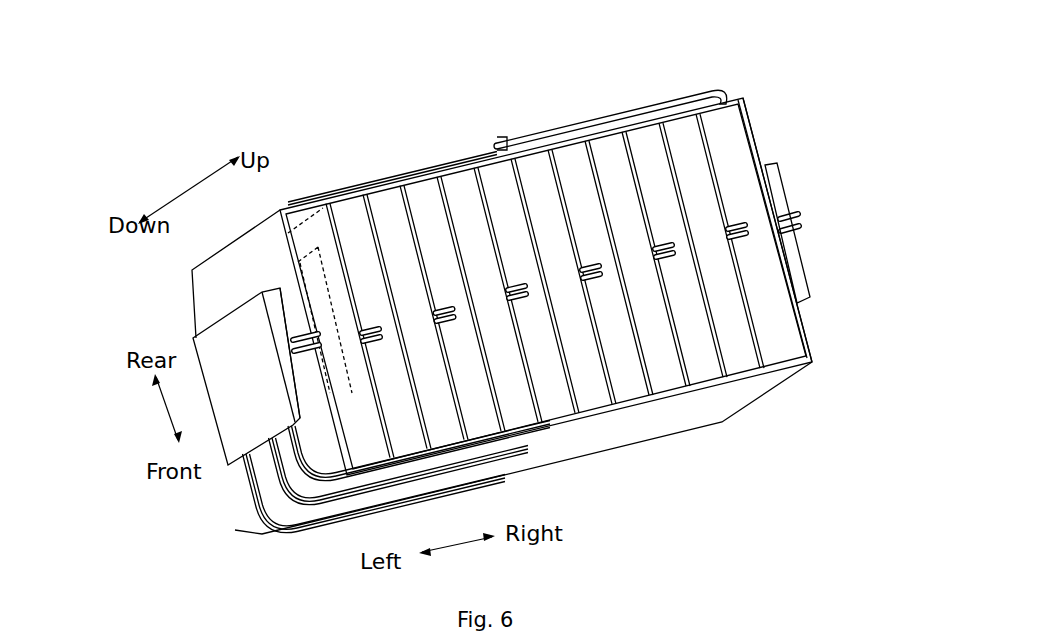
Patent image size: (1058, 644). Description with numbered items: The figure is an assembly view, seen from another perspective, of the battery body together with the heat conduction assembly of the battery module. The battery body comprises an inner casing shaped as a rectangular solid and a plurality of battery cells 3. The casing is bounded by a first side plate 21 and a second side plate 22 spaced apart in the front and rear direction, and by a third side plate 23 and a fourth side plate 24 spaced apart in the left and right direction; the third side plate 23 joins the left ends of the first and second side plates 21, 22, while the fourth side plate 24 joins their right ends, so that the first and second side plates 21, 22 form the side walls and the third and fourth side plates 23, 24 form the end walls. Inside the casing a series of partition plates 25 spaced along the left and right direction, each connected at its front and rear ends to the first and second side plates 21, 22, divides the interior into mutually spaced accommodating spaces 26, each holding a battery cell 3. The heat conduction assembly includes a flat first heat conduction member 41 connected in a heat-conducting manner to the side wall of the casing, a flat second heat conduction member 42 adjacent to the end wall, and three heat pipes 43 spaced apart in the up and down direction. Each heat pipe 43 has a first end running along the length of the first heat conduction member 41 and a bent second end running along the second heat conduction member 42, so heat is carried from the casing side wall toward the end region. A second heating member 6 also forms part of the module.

The battery cell 3 is at (783, 343).
The second heating member 6 is at (277, 293).
The first side plate 21 is at (680, 423).
The second side plate 22 is at (352, 187).
The third side plate 23 is at (210, 288).
The fourth side plate 24 is at (752, 128).
The partition plate 25 is at (406, 182).
The accommodating space 26 is at (418, 170).
The first heat conduction member 41 is at (592, 128).
The second heat conduction member 42 is at (205, 343).
The heat pipe 43 is at (716, 90).